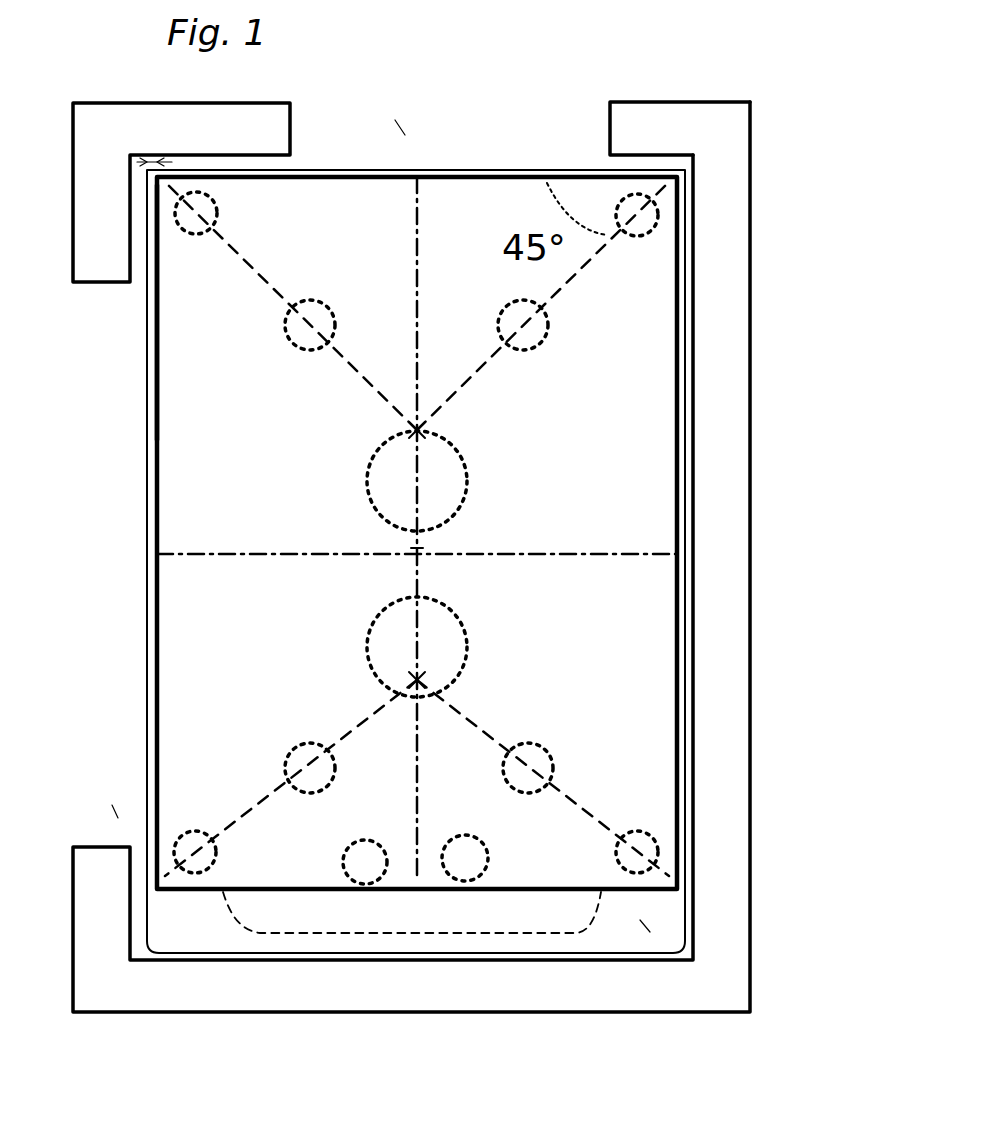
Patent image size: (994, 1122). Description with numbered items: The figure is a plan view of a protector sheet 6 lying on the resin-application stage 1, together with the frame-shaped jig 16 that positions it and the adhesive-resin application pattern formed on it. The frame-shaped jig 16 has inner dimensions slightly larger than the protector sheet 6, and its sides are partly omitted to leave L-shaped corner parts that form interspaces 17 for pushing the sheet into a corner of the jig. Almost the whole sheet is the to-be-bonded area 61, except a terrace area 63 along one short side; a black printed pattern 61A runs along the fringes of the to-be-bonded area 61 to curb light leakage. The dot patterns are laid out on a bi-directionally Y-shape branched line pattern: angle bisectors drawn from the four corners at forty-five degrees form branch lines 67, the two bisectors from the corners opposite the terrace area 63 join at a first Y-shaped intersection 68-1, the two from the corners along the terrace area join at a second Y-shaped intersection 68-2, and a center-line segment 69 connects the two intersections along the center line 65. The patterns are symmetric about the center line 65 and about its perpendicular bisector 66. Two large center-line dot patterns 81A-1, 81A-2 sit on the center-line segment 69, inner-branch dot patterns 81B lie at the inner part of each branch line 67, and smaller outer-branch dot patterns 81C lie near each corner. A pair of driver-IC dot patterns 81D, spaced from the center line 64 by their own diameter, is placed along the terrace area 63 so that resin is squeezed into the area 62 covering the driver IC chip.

The resin-application stage 1 is at (830, 528).
The protector sheet 6 is at (373, 561).
The frame-shaped jig 16 is at (198, 118).
The interspaces 17 is at (403, 128).
The to-be-bonded area 61 is at (152, 463).
The black printed pattern 61A is at (150, 158).
The area covering driver IC chip 62 is at (575, 935).
The terrace area 63 is at (645, 926).
The center line 64 is at (150, 623).
The center line 65 is at (417, 180).
The perpendicular bisector 66 is at (150, 555).
The branch line 67 is at (585, 262).
The first Y-shaped intersection 68-1 is at (420, 432).
The second Y-shaped intersection 68-2 is at (420, 683).
The center-line segment 69 is at (415, 535).
The center-line dot pattern 81A-1 is at (467, 460).
The center-line dot pattern 81A-2 is at (467, 628).
The inner-branch dot pattern 81B is at (530, 743).
The outer-branch dot pattern 81C is at (647, 833).
The driver-IC dot pattern 81D is at (487, 850).